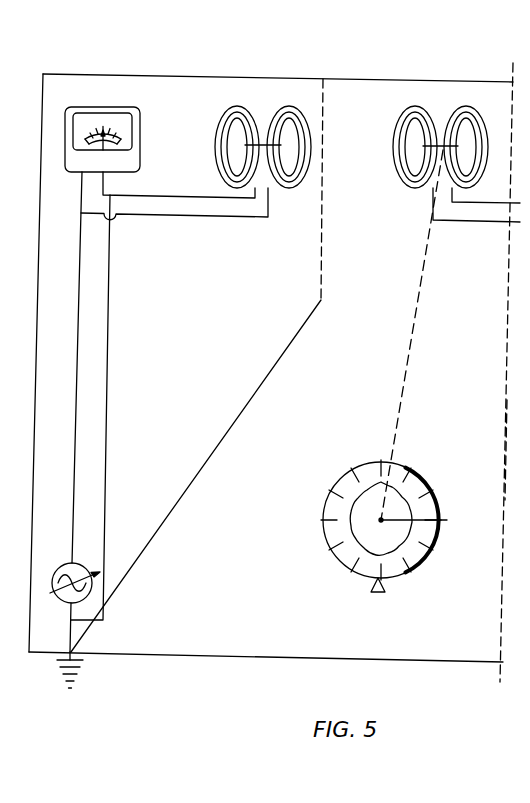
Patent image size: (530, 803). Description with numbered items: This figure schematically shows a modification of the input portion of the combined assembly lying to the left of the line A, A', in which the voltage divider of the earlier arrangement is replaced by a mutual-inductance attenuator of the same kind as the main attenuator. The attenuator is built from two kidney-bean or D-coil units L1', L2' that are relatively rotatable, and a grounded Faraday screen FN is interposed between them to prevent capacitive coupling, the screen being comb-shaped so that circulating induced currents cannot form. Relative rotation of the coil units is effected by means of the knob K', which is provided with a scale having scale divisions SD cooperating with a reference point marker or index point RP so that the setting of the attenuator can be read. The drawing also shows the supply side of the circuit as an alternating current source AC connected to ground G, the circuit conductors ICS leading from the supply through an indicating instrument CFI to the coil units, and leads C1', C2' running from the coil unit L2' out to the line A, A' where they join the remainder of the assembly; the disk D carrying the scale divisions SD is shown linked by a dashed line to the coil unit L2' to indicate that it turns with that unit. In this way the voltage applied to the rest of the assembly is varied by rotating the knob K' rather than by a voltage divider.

The current/frequency indicator meter CFI is at (124, 106).
The indicator circuit switch line ICS is at (135, 197).
The D-coil unit L1' is at (263, 120).
The D-coil unit L2' is at (440, 120).
The first capacitor lead C1' is at (486, 193).
The second capacitor lead C2' is at (476, 216).
The grounded Faraday screen FN is at (318, 229).
The alternating current source AC is at (58, 571).
The ground G is at (80, 674).
The scale divisions SD is at (348, 567).
The disk D is at (437, 503).
The knob K' is at (425, 520).
The reference point marker RP is at (386, 592).
The line A, A' A is at (514, 369).
The line A A' is at (506, 552).